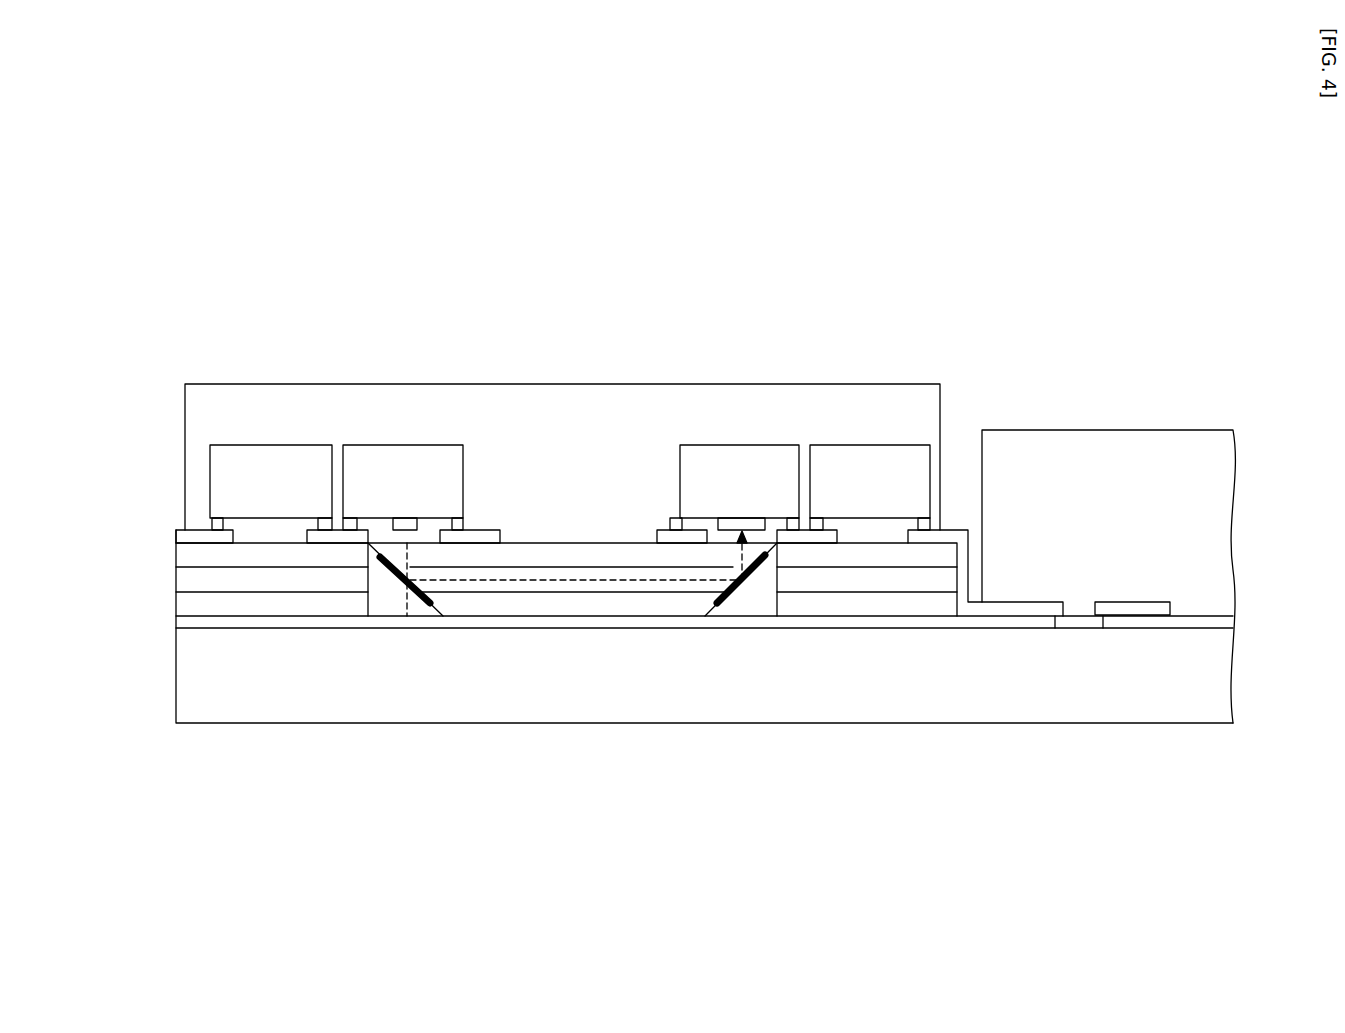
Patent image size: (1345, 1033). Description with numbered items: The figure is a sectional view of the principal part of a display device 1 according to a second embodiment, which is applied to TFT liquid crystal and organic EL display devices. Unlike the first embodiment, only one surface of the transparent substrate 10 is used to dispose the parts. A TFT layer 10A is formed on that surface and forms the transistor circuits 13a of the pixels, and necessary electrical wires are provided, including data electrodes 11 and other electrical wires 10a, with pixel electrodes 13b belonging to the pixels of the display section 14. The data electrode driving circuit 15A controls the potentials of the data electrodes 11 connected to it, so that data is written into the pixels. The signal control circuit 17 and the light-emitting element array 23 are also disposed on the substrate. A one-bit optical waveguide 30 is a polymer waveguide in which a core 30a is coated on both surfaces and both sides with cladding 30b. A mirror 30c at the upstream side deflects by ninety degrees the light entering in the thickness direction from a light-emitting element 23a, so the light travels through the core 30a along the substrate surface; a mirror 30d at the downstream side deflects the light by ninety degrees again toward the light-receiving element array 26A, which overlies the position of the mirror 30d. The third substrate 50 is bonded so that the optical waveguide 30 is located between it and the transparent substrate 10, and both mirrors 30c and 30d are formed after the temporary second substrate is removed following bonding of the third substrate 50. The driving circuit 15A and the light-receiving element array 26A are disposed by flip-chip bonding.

The display device 1 is at (772, 311).
The transparent substrate 10 is at (197, 679).
The TFT layer 10A is at (187, 626).
The electrical wires 10a is at (670, 532).
The data electrode 11 is at (1041, 602).
The transistor circuit 13a is at (1083, 621).
The pixel electrode 13b is at (1130, 612).
The display section 14 is at (1164, 455).
The data electrode driving circuit 15A is at (889, 466).
The signal control circuit 17 is at (285, 455).
The light-emitting element array 23 is at (428, 455).
The light-emitting element 23a is at (394, 519).
The light-receiving element array 26A is at (710, 470).
The optical waveguide 30 is at (553, 582).
The core 30a is at (609, 593).
The cladding 30b is at (544, 553).
The mirror 30c is at (401, 602).
The mirror 30d is at (738, 603).
The third substrate 50 is at (917, 405).